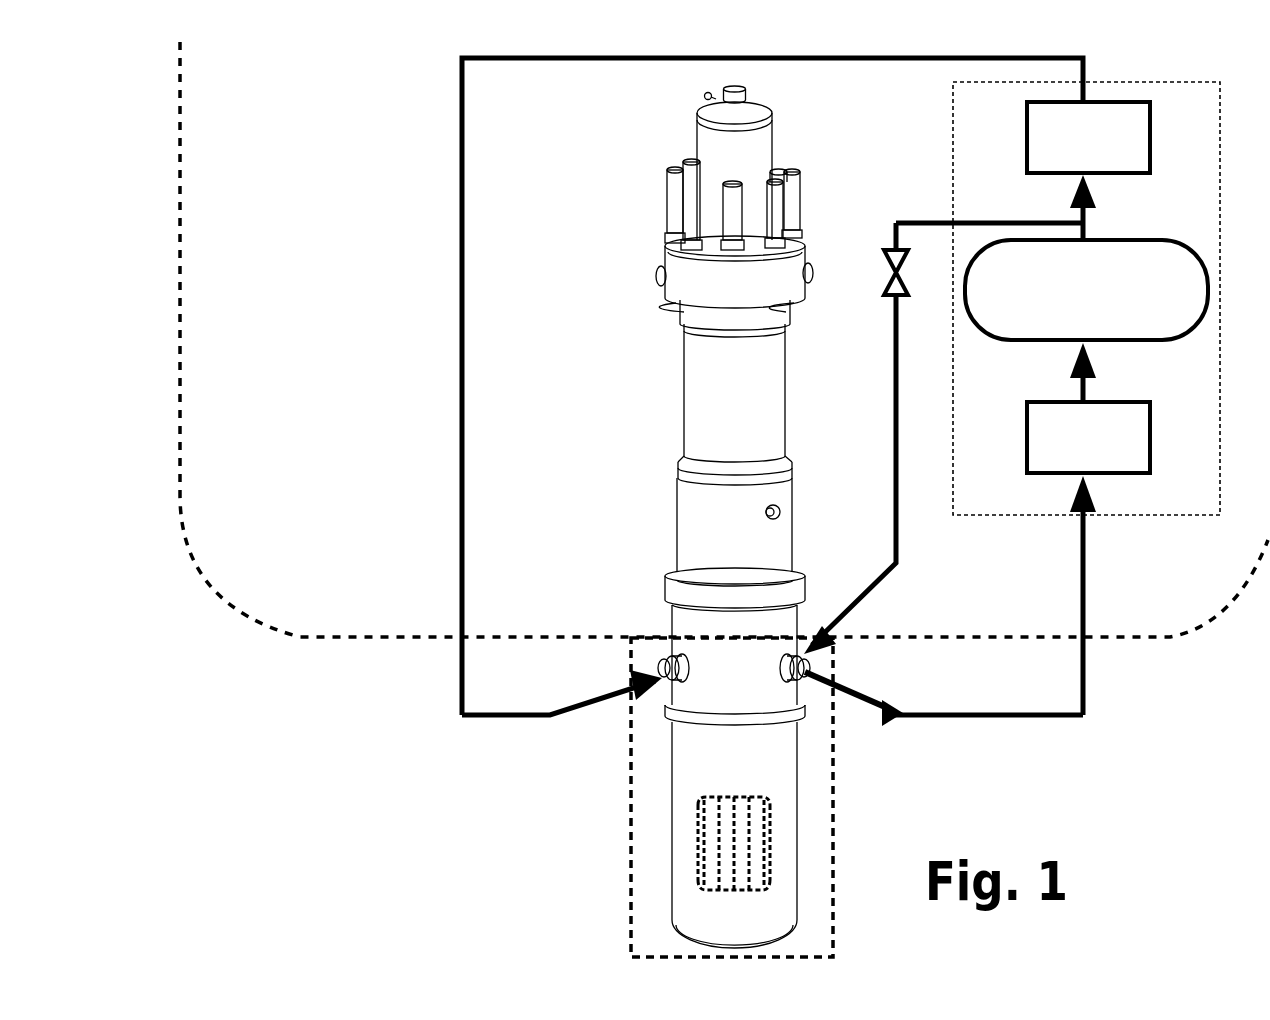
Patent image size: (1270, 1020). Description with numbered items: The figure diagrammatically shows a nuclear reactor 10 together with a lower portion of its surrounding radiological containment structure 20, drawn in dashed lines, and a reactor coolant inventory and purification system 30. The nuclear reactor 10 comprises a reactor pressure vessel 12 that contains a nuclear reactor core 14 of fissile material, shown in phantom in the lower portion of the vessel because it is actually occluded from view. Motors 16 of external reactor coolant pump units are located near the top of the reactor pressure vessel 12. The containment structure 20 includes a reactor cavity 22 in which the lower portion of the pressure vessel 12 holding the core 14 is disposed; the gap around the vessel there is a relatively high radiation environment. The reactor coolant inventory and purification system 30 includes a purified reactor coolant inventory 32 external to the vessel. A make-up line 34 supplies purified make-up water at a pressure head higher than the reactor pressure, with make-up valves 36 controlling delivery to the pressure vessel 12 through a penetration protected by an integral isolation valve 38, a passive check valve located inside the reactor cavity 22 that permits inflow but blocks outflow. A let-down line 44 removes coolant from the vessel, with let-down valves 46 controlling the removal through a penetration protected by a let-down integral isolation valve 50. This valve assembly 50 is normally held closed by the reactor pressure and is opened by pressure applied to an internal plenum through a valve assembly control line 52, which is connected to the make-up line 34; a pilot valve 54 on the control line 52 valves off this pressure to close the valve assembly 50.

The nuclear reactor 10 is at (718, 517).
The reactor pressure vessel 12 is at (700, 428).
The nuclear reactor core 14 is at (700, 845).
The motors 16 is at (775, 202).
The radiological containment structure 20 is at (182, 217).
The reactor cavity 22 is at (772, 797).
The reactor coolant inventory and purification system 30 is at (953, 152).
The purified reactor coolant inventory 32 is at (1140, 340).
The make-up line 34 is at (1088, 215).
The make-up valves 36 is at (1150, 135).
The make-up line integral isolation valve 38 is at (668, 660).
The let-down line 44 is at (1080, 388).
The let-down valves 46 is at (1027, 436).
The let-down line integral isolation valve 50 is at (795, 712).
The valve assembly control line 52 is at (896, 420).
The pilot valve 54 is at (890, 258).